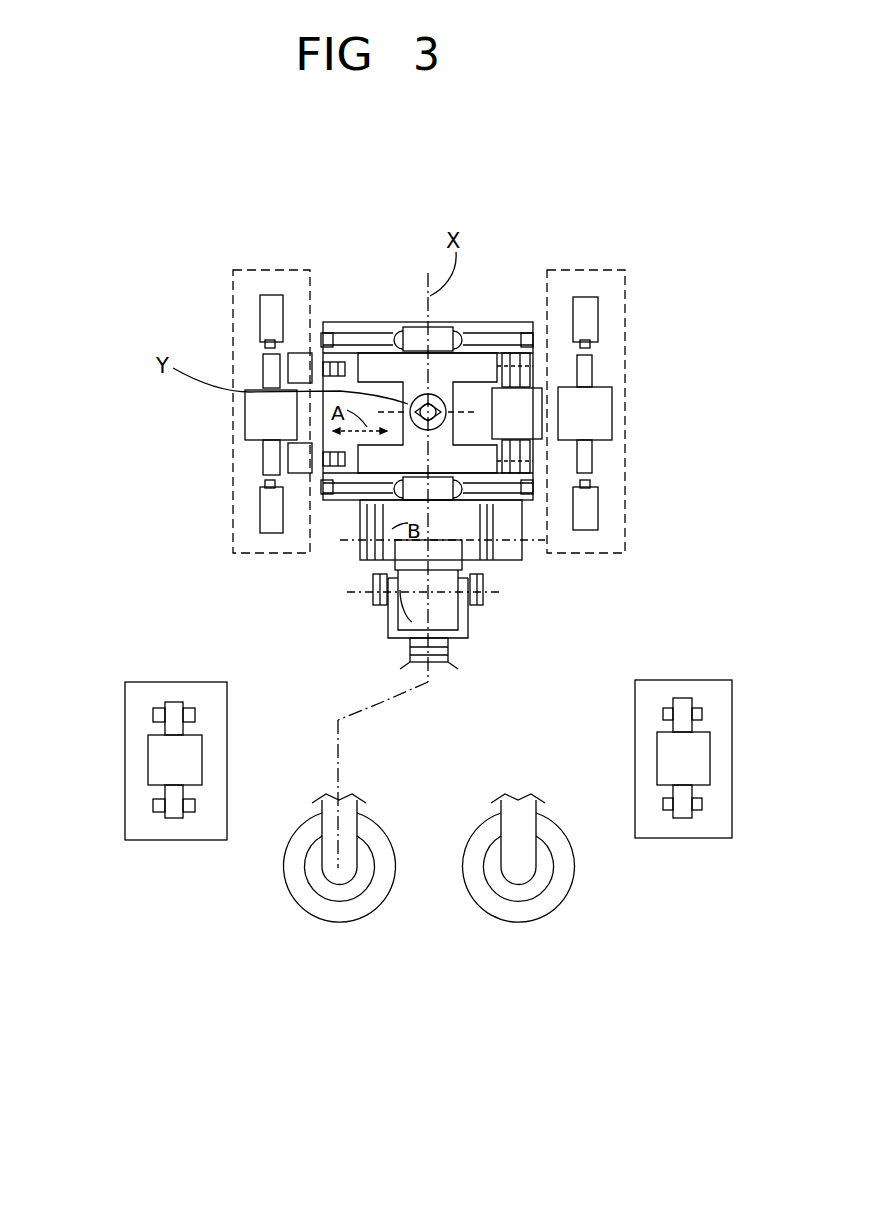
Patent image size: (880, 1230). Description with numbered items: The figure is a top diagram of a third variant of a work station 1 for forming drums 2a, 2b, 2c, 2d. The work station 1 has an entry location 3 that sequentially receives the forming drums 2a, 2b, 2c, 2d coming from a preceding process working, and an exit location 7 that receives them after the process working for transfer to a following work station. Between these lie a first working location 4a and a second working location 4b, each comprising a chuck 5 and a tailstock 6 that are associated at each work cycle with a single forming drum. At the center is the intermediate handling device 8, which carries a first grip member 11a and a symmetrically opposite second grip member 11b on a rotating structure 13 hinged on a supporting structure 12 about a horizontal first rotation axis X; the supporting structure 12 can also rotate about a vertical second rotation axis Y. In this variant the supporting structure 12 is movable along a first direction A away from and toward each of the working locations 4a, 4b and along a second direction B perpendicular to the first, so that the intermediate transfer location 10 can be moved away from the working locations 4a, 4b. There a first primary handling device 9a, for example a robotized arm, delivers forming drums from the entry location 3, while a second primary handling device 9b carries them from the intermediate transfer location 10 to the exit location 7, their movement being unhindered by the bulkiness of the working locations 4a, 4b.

The work station 1 is at (597, 151).
The forming drum 2a is at (265, 414).
The forming drum 2b is at (527, 401).
The forming drum 2c is at (160, 760).
The forming drum 2d is at (592, 408).
The entry location 3 is at (210, 823).
The first working location 4a is at (250, 268).
The second working location 4b is at (612, 268).
The chuck 5 is at (265, 512).
The tailstock 6 is at (265, 320).
The exit location 7 is at (708, 690).
The intermediate handling device 8 is at (410, 321).
The first primary handling device 9a is at (347, 898).
The second primary handling device 9b is at (517, 893).
The intermediate transfer location 10 is at (483, 617).
The first grip member 11a is at (507, 366).
The second grip member 11b is at (345, 368).
The supporting structure 12 is at (442, 338).
The rotating structure 13 is at (380, 368).